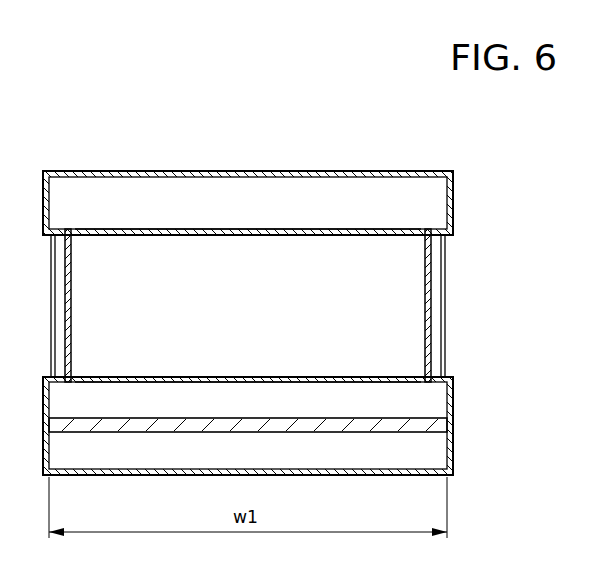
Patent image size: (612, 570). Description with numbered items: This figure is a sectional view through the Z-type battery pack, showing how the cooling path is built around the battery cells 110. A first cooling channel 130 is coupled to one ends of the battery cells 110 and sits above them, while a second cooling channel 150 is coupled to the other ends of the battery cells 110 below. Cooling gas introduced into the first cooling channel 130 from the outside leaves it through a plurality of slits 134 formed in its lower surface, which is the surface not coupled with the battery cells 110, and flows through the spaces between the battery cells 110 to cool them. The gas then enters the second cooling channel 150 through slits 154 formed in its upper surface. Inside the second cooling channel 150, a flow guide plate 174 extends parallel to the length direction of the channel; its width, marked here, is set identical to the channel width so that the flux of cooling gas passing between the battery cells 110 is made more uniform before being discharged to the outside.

The first cooling channel 130 is at (368, 171).
The slits 134 is at (176, 235).
The battery cells 110 is at (407, 273).
The second cooling channel 150 is at (450, 450).
The slits 154 is at (259, 377).
The flow guide plate 174 is at (422, 418).